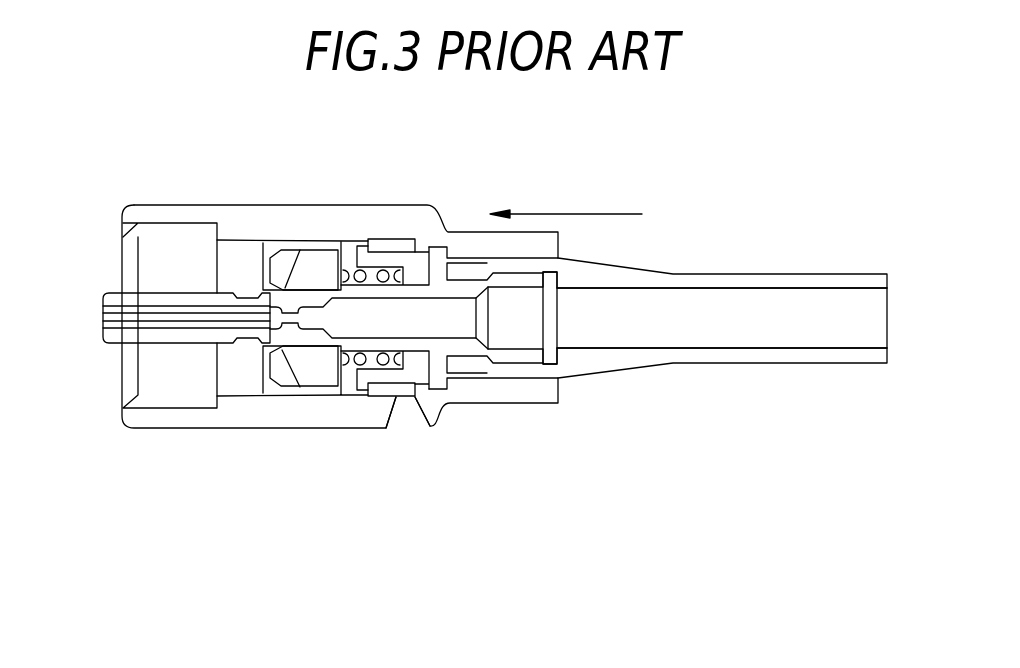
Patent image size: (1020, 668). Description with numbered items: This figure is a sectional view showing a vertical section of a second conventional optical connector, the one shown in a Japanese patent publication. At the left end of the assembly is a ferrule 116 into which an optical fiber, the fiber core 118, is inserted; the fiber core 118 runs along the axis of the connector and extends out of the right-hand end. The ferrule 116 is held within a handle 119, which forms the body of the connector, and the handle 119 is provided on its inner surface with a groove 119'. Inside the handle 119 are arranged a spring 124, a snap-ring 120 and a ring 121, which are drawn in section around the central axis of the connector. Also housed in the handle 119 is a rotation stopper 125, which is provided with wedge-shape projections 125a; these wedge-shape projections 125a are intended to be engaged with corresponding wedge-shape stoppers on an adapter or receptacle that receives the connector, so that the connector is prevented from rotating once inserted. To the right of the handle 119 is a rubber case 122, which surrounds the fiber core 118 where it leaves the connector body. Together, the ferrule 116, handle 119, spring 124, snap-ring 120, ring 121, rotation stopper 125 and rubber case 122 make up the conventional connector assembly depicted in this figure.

The ferrule 116 is at (187, 333).
The fiber core 118 is at (710, 302).
The handle 119 is at (340, 374).
The groove 119' is at (451, 495).
The snap-ring 120 is at (418, 398).
The ring 121 is at (440, 380).
The rubber case 122 is at (647, 367).
The spring 124 is at (362, 270).
The rotation stopper 125 is at (308, 362).
The wedge-shape projections 125a is at (284, 262).